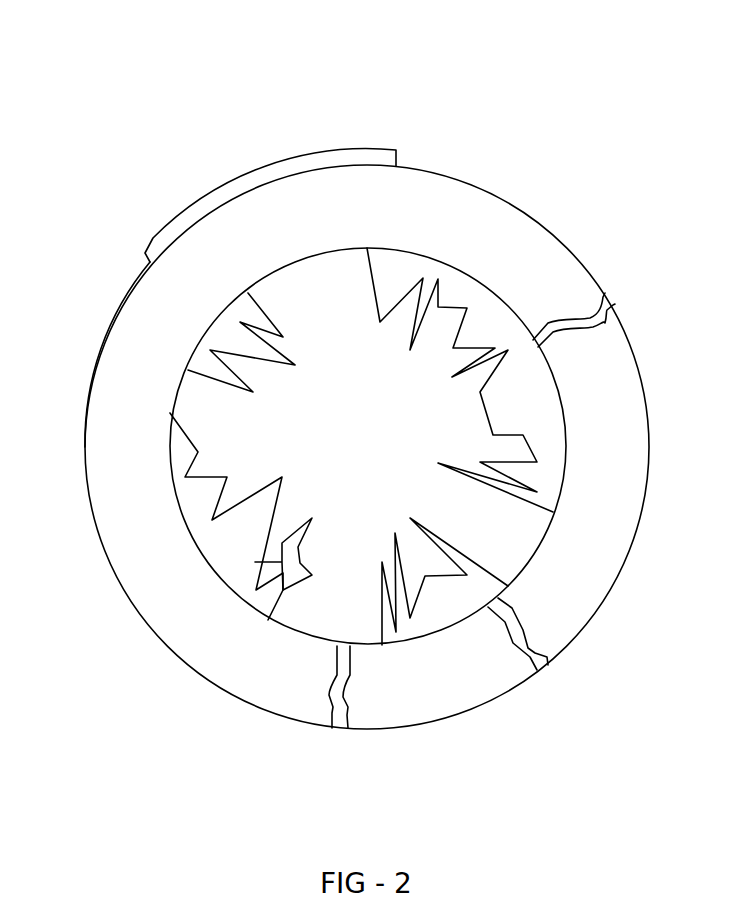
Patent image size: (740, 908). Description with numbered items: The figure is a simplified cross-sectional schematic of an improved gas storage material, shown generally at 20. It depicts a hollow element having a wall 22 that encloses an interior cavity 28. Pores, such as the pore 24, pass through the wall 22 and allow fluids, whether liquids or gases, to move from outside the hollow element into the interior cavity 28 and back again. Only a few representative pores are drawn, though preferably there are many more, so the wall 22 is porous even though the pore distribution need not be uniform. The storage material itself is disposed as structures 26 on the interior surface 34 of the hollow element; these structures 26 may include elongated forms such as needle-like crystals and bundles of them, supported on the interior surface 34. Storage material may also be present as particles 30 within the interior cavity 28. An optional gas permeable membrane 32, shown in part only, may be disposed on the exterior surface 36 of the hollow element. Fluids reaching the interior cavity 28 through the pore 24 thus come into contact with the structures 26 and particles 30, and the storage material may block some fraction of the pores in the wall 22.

The gas storage material 20 is at (587, 80).
The wall 22 is at (535, 263).
The pore 24 is at (614, 306).
The structures 26 is at (524, 407).
The interior cavity 28 is at (355, 450).
The particles 30 is at (312, 518).
The gas permeable membrane 32 is at (267, 180).
The interior surface 34 is at (180, 398).
The exterior surface 36 is at (109, 333).